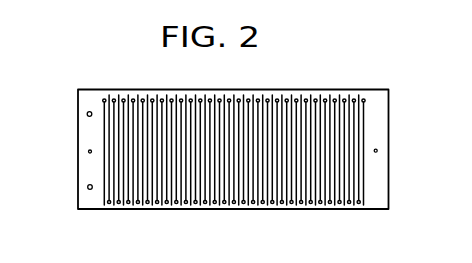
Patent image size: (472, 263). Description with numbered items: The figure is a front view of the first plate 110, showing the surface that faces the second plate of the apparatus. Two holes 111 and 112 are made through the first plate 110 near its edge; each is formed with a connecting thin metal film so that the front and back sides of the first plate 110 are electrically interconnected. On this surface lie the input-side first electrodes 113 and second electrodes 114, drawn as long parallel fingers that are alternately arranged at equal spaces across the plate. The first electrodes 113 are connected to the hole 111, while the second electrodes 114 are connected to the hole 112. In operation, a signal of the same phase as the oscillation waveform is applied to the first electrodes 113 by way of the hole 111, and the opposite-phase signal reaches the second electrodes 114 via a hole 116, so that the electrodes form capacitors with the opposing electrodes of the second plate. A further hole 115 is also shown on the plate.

The first plate 110 is at (83, 130).
The hole 111 is at (196, 126).
The hole 112 is at (242, 173).
The input-side first electrodes 113 is at (102, 164).
The input-side second electrodes 114 is at (359, 191).
The mounting hole 115 is at (87, 112).
The hole 116 is at (88, 187).